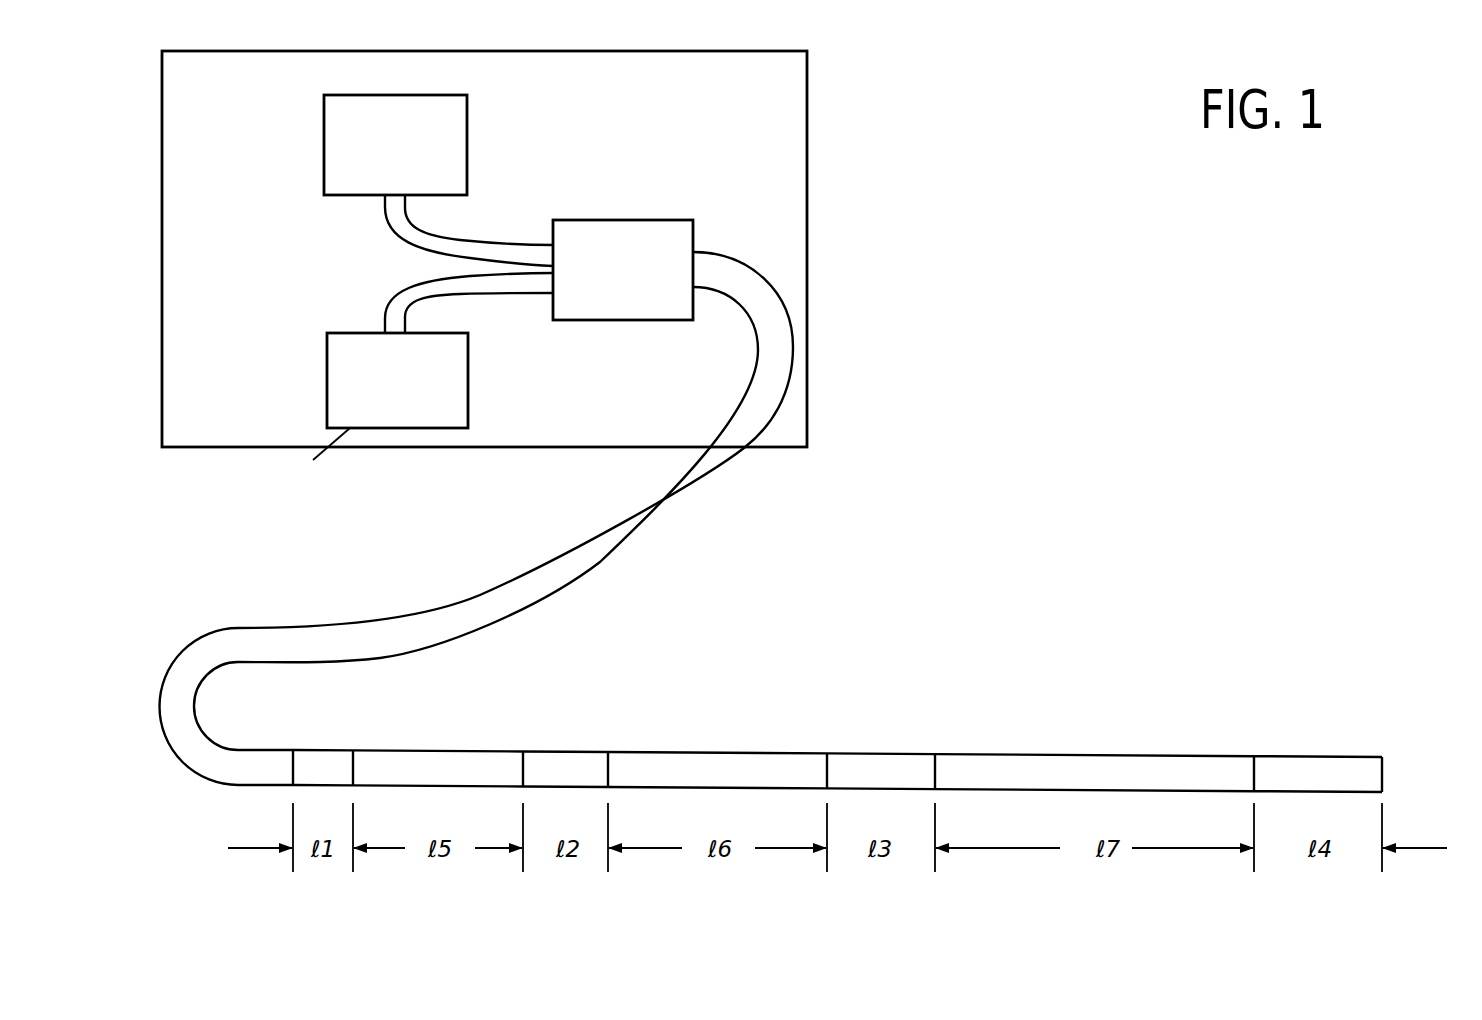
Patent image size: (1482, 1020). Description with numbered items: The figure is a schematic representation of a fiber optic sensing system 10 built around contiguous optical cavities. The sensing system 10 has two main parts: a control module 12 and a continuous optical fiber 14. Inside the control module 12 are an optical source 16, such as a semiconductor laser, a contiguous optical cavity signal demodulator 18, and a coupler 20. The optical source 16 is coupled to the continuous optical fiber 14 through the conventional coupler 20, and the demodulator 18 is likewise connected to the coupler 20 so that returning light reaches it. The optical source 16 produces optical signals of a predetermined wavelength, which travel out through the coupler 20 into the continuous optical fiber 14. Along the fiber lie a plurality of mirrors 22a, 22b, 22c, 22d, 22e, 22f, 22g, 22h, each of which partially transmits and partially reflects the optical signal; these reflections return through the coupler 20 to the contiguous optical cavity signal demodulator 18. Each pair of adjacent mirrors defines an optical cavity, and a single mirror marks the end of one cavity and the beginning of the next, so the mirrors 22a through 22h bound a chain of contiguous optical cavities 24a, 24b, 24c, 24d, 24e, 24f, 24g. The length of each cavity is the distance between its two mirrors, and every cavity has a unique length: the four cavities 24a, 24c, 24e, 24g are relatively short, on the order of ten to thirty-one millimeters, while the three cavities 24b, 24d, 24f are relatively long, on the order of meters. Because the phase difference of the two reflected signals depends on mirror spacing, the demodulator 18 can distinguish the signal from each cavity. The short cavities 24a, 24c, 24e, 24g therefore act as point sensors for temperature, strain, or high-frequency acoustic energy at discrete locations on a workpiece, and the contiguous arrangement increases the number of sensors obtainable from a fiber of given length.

The sensing system 10 is at (872, 274).
The control module 12 is at (807, 120).
The continuous optical fiber 14 is at (205, 778).
The optical source 16 is at (467, 143).
The contiguous optical cavity signal demodulator 18 is at (468, 387).
The coupler 20 is at (620, 218).
The mirror 22a is at (293, 750).
The mirror 22b is at (353, 750).
The mirror 22c is at (523, 752).
The mirror 22d is at (608, 752).
The mirror 22e is at (827, 753).
The mirror 22f is at (935, 754).
The mirror 22g is at (1254, 756).
The mirror 22h is at (1382, 757).
The optical cavity 24a is at (318, 750).
The optical cavity 24b is at (417, 751).
The optical cavity 24c is at (557, 752).
The optical cavity 24d is at (713, 753).
The optical cavity 24e is at (885, 754).
The optical cavity 24f is at (1103, 755).
The optical cavity 24g is at (1318, 757).